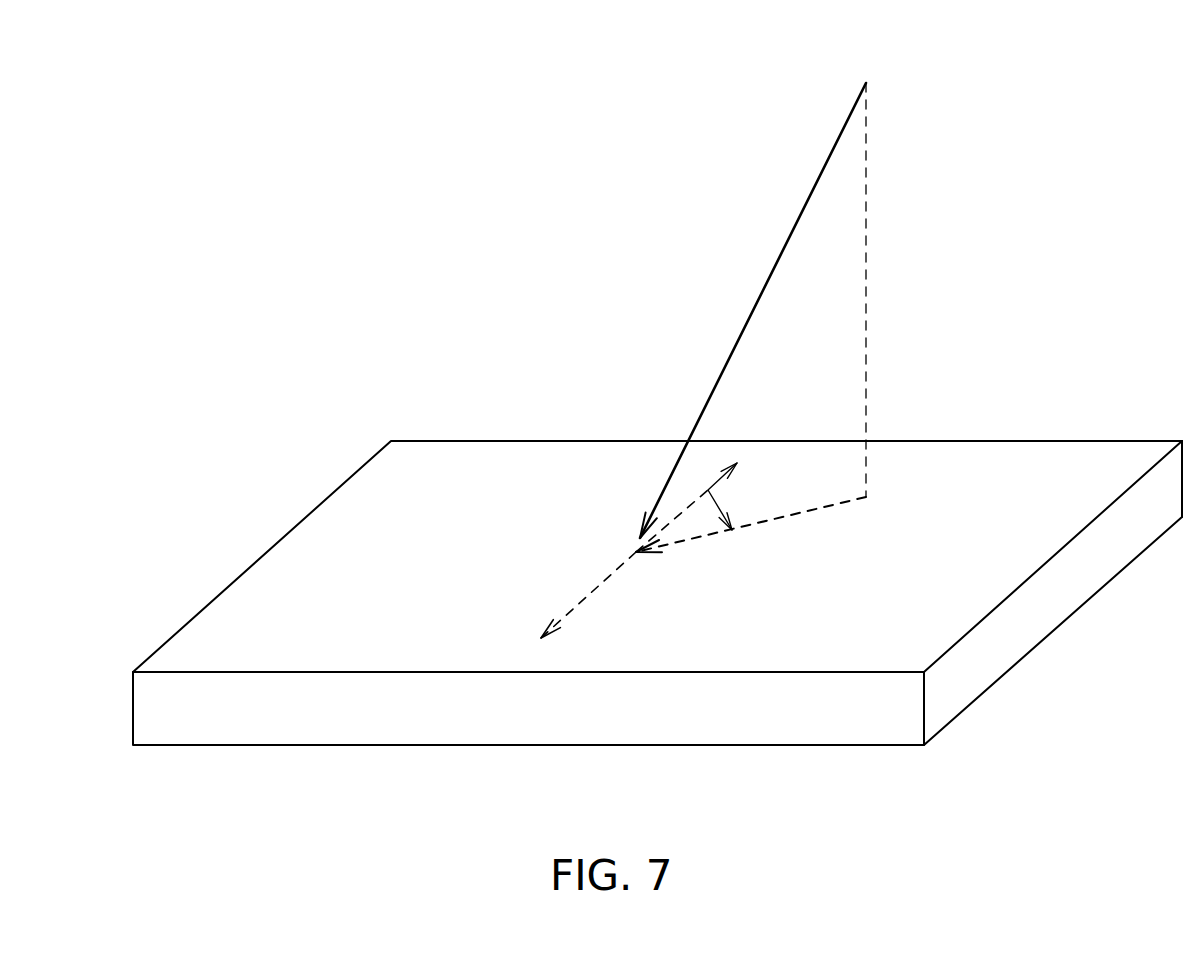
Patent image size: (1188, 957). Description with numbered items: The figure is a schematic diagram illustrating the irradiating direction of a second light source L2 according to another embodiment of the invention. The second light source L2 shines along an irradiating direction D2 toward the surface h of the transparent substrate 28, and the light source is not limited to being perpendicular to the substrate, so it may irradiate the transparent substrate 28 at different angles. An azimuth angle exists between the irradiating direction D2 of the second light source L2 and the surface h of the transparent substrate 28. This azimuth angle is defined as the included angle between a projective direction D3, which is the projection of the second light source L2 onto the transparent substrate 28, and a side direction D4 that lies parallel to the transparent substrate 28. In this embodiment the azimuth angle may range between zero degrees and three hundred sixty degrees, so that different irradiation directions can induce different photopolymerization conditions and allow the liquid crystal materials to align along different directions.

The transparent substrate 28 is at (545, 724).
The surface of the transparent substrate h is at (1067, 468).
The second light source L2 is at (890, 100).
The irradiating direction D2 is at (786, 290).
The projective direction D3 is at (751, 527).
The side direction D4 is at (588, 595).